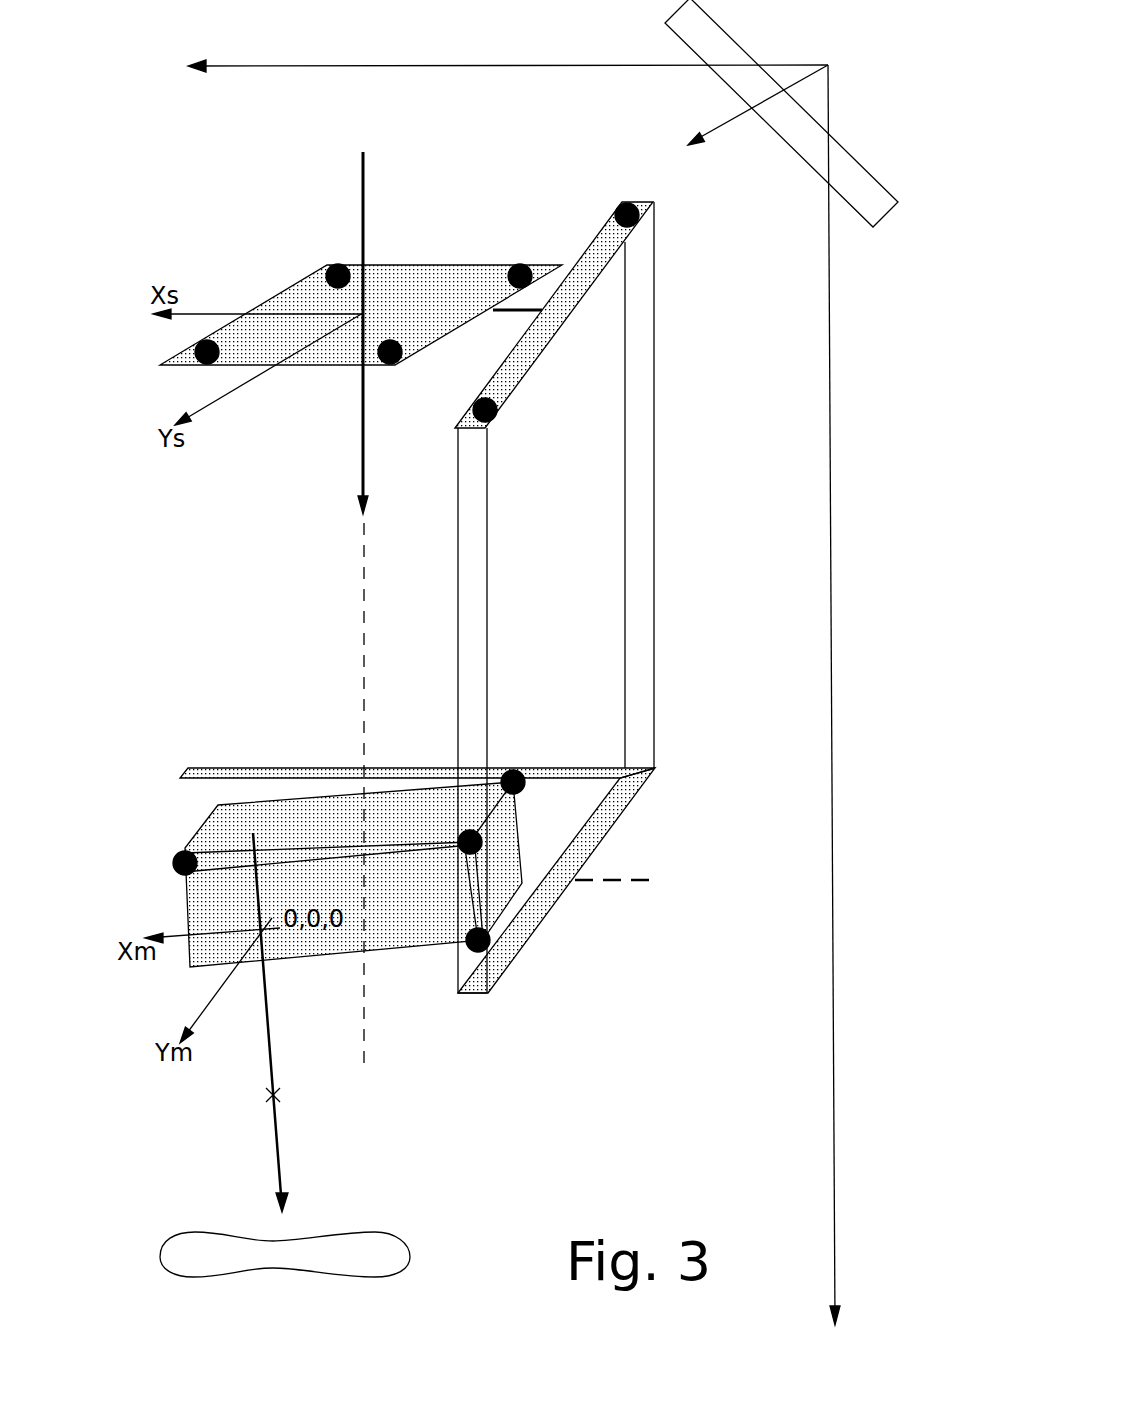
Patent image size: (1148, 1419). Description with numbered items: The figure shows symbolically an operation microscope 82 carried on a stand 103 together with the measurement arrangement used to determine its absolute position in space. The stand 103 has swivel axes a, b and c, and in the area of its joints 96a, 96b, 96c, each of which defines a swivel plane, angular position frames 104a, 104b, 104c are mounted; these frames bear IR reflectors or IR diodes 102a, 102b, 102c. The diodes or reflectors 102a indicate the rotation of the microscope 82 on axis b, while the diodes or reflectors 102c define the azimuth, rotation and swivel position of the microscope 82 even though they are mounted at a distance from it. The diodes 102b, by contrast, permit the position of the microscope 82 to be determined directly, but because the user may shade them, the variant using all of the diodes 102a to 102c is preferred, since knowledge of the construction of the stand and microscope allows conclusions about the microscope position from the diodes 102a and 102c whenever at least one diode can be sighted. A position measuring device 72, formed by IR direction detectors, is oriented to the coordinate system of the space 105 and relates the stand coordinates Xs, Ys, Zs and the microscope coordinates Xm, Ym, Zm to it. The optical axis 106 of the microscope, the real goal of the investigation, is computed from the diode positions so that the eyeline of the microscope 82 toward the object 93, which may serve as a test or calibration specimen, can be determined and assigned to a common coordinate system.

The position measuring device 72 is at (863, 182).
The microscope 82 is at (225, 828).
The object 93 is at (387, 1243).
The joint on stand 96a is at (563, 320).
The joint on stand 96b is at (417, 739).
The joint on stand 96c is at (652, 878).
The IR reflectors or IR diodes 102a is at (640, 216).
The IR reflectors or IR diodes 102b is at (472, 837).
The IR reflectors or IR diodes 102c is at (327, 273).
The stand 103 is at (348, 166).
The angular position frame 104a is at (573, 288).
The angular position frame 104b is at (280, 858).
The angular position frame 104c is at (467, 280).
The coordinate system of the space 105 is at (830, 423).
The optical axis 106 is at (270, 1045).